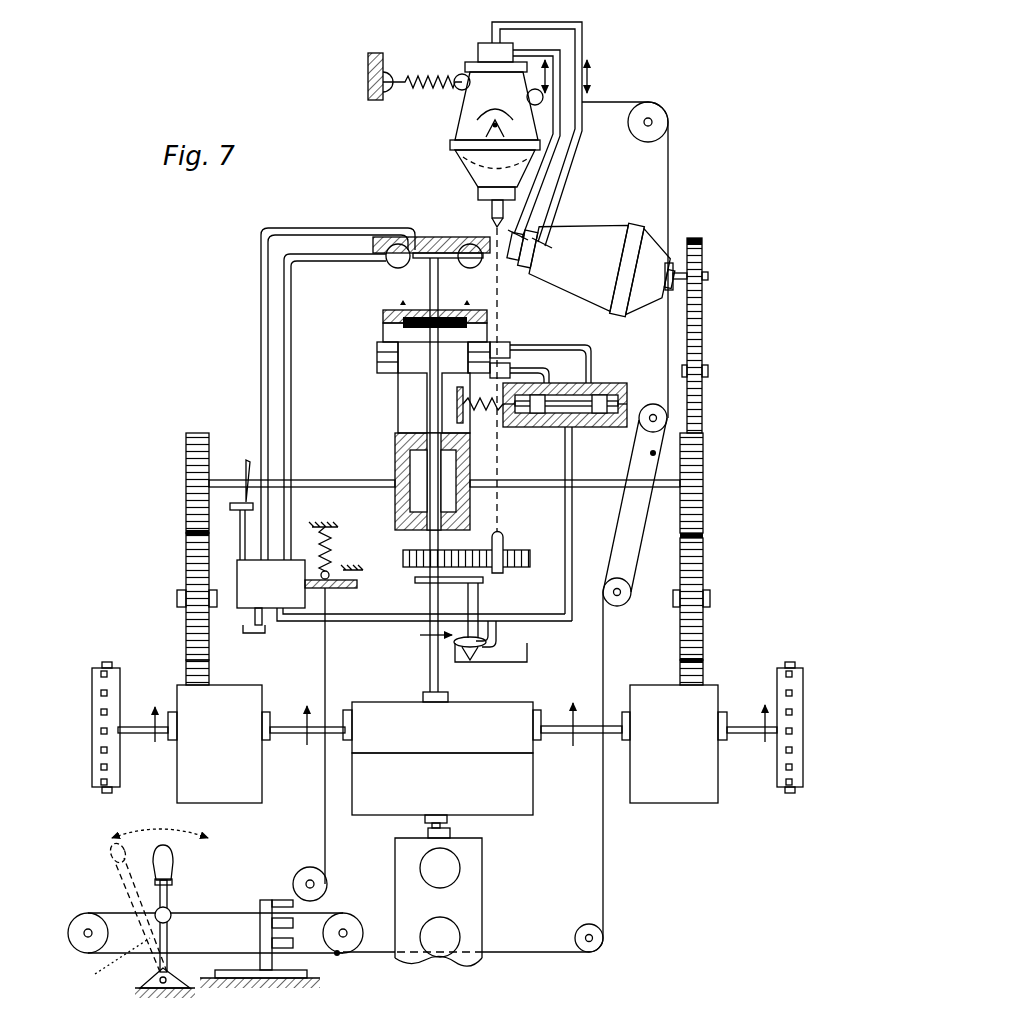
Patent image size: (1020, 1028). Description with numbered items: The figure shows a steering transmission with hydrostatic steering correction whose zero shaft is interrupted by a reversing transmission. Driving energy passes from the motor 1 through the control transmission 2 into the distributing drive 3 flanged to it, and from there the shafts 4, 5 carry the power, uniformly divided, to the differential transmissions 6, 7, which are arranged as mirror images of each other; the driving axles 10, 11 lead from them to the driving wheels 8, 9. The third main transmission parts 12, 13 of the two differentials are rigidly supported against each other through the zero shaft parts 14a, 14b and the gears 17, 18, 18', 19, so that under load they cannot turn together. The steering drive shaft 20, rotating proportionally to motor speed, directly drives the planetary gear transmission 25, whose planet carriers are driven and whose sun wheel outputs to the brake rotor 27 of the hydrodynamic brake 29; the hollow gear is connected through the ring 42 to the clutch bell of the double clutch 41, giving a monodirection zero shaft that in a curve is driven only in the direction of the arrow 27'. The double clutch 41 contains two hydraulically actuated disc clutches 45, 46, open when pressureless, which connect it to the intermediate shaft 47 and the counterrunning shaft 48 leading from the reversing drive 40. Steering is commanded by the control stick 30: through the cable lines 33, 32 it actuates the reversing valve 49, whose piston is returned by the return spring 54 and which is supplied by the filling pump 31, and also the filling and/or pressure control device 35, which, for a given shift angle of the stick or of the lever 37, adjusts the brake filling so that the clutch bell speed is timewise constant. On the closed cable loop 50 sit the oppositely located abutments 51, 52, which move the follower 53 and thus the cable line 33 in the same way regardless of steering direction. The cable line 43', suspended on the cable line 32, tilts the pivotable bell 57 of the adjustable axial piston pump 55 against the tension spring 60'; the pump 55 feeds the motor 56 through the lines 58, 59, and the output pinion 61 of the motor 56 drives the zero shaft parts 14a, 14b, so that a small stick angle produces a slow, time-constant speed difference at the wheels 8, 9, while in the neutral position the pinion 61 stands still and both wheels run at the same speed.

The motor 1 is at (473, 920).
The control transmission 2 is at (502, 804).
The distributing drive 3 is at (472, 742).
The shaft 4 is at (592, 732).
The shaft 5 is at (291, 735).
The differential transmission 6 is at (674, 744).
The differential transmission 7 is at (218, 759).
The driving wheel 8 is at (778, 767).
The driving wheel 9 is at (114, 756).
The driving axle 10 is at (731, 724).
The driving axle 11 is at (128, 722).
The third main transmission part 12 is at (702, 676).
The third main transmission part 13 is at (201, 676).
The zero shaft part 14a is at (313, 481).
The zero shaft part 14b is at (597, 481).
The gear 17 is at (698, 501).
The gear 18 is at (179, 595).
The gear 18' is at (713, 596).
The gear 19 is at (195, 512).
The steering drive shaft 20 is at (437, 588).
The planetary gear transmission 25 is at (490, 310).
The brake rotor 27 is at (406, 263).
The arrow 27' is at (408, 284).
The hydrodynamic brake 29 is at (447, 231).
The control stick 30 is at (168, 905).
The filling pump 31 is at (470, 662).
The cable line 32 is at (622, 395).
The cable line 33 is at (323, 805).
The filling and/or pressure control device 35 is at (283, 596).
The lever 37 is at (335, 589).
The reversing drive 40 is at (392, 515).
The double clutch 41 is at (376, 353).
The ring 42 is at (383, 338).
The belt 43' is at (532, 527).
The disc clutch 45 is at (478, 343).
The disc clutch 46 is at (397, 375).
The intermediate shaft 47 is at (445, 483).
The counterrunning shaft 48 is at (422, 410).
The reversing valve 49 is at (602, 376).
The closed cable loop 50 is at (223, 912).
The abutment 51 is at (295, 920).
The abutment 52 is at (285, 945).
The follower 53 is at (272, 937).
The return spring 54 is at (478, 411).
The adjustable axial piston pump 55 is at (508, 104).
The motor 56 is at (604, 264).
The pointer 57 is at (491, 124).
The pipe 58 is at (547, 150).
The pipe 59 is at (583, 42).
The tension spring 60' is at (415, 66).
The output pinion 61 is at (703, 248).